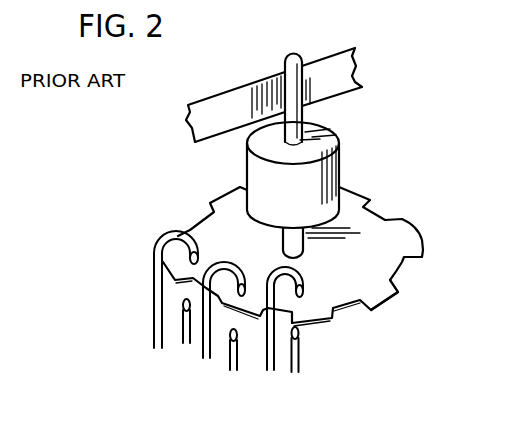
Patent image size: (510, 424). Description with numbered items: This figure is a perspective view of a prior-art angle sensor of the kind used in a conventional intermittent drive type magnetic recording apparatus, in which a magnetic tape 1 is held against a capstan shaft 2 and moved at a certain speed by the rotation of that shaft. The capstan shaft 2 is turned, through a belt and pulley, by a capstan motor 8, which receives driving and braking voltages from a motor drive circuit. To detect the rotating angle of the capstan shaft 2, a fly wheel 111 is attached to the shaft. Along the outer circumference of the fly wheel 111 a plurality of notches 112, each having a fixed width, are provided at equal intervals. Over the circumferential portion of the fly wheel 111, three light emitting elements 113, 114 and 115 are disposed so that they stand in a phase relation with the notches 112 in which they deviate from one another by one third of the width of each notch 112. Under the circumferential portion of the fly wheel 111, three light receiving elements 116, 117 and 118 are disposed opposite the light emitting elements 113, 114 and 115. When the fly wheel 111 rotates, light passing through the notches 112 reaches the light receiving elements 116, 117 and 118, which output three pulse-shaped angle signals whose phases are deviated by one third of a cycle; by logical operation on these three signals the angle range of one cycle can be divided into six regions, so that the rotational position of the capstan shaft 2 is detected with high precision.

The magnetic tape 1 is at (336, 62).
The capstan shaft 2 is at (288, 70).
The capstan motor 8 is at (340, 160).
The fly wheel 111 is at (362, 246).
The notches 112 is at (402, 280).
The light emitting element 113 is at (302, 290).
The light emitting element 114 is at (243, 287).
The light emitting element 115 is at (198, 258).
The light receiving element 116 is at (300, 340).
The light receiving element 117 is at (238, 340).
The light receiving element 118 is at (183, 315).